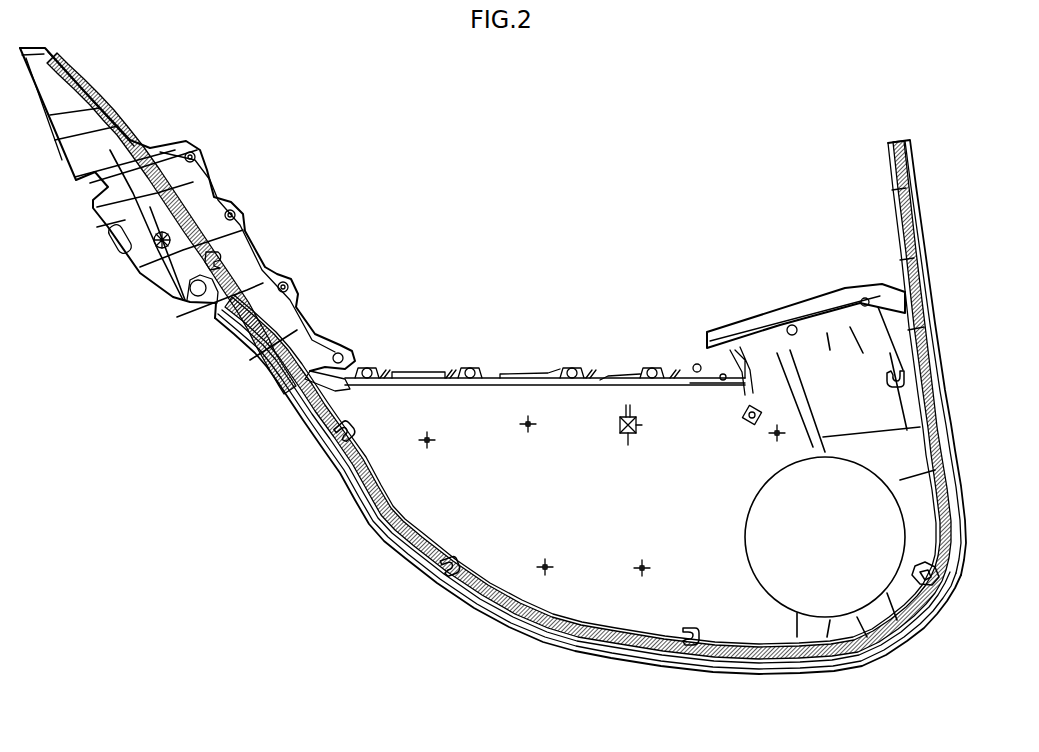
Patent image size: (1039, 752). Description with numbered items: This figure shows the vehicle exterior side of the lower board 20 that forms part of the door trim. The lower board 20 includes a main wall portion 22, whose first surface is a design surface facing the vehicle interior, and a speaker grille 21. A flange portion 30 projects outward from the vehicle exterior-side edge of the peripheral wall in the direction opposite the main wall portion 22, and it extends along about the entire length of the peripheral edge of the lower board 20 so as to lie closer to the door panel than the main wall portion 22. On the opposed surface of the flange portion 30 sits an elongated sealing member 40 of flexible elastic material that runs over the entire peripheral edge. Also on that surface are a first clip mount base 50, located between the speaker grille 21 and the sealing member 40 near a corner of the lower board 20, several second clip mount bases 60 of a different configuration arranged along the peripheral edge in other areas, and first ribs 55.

The lower board 20 is at (555, 343).
The speaker grille 21 is at (887, 503).
The main wall portion 22 is at (488, 413).
The flange portion 30 is at (960, 538).
The sealing member 40 is at (897, 652).
The first clip mount base 50 is at (932, 615).
The first ribs 55 is at (948, 590).
The second clip mount bases 60 is at (327, 447).